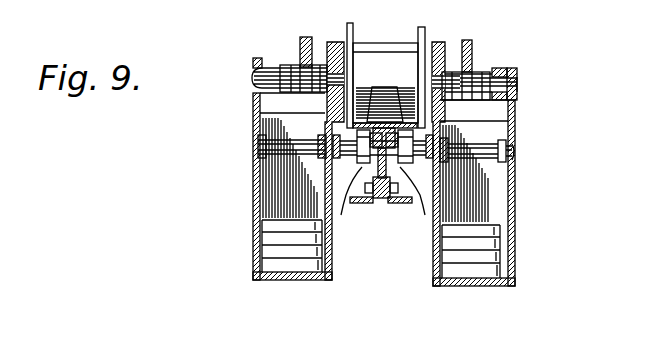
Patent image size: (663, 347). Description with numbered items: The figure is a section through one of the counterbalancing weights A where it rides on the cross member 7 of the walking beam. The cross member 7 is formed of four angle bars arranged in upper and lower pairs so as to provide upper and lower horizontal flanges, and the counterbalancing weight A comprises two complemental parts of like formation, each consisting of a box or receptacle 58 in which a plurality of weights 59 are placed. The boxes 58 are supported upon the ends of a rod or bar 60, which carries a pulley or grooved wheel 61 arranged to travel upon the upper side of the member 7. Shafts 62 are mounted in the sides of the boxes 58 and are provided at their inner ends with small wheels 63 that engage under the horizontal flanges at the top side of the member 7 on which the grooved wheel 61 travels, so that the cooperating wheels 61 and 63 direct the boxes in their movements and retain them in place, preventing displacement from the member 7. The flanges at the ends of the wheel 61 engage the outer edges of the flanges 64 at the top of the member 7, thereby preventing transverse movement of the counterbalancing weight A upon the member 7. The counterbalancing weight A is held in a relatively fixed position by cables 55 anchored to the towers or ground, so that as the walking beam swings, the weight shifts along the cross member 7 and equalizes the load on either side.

The cross member 7 is at (396, 204).
The cables 55 is at (302, 44).
The box 58 is at (253, 276).
The weights 59 is at (440, 272).
The rod 60 is at (519, 84).
The grooved wheel 61 is at (380, 56).
The shafts 62 is at (516, 152).
The small wheels 63 is at (387, 225).
The flanges 64 is at (370, 117).
The counterbalancing weight A is at (252, 197).